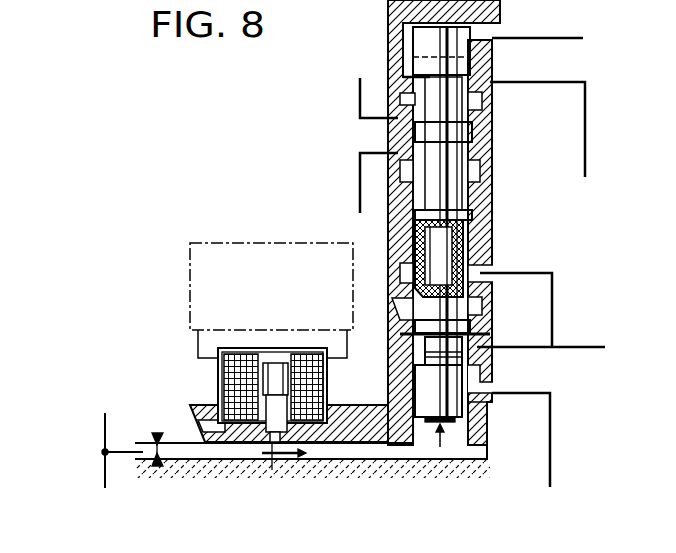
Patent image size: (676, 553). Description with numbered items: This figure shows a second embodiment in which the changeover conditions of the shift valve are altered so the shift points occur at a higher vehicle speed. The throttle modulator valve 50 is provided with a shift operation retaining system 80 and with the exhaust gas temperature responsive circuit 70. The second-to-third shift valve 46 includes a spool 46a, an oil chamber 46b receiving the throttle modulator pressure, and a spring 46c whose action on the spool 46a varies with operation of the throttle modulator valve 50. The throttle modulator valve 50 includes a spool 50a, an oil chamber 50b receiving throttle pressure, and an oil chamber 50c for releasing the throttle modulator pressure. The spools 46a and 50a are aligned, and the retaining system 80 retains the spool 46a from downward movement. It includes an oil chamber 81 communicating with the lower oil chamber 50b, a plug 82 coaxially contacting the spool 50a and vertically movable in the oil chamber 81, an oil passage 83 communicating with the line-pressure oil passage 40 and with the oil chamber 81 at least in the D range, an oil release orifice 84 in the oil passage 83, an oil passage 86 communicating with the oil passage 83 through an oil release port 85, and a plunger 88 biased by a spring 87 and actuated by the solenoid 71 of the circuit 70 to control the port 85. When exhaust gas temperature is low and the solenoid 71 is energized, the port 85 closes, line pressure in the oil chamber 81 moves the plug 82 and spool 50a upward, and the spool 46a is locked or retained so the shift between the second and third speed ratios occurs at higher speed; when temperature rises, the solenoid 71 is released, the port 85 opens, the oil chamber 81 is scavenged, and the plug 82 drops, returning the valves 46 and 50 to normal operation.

The oil passage 40 is at (97, 443).
The 2–3 shift valve 46 is at (400, 22).
The spool 46a is at (452, 162).
The oil chamber 46b is at (486, 270).
The spring 46c is at (466, 226).
The throttle modulator valve 50 is at (483, 303).
The spool 50a is at (420, 315).
The oil chamber 50b is at (487, 392).
The oil chamber 50c is at (482, 343).
The exhaust gas temperature responsive circuit 70 is at (188, 252).
The solenoid 71 is at (222, 384).
The shift operation retaining system 80 is at (352, 460).
The oil chamber 81 is at (462, 427).
The plug 82 is at (416, 388).
The oil passage 83 is at (408, 457).
The oil release orifice 84 is at (165, 468).
The oil release port 85 is at (273, 470).
The oil passage 86 is at (198, 421).
The spring 87 is at (290, 427).
The plunger 88 is at (290, 378).